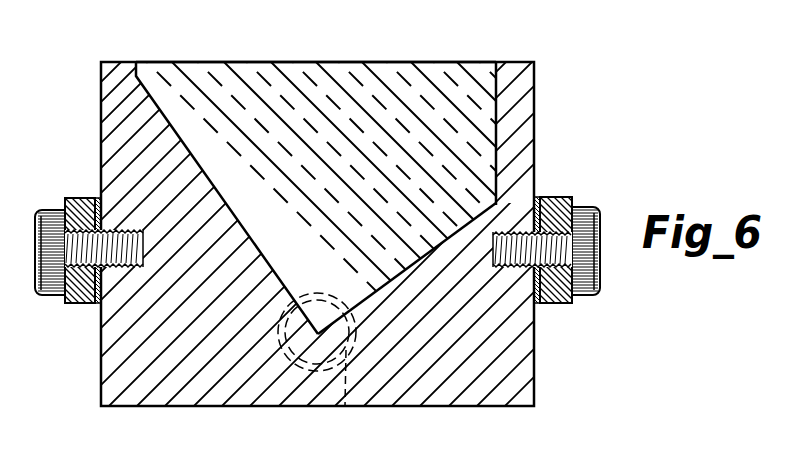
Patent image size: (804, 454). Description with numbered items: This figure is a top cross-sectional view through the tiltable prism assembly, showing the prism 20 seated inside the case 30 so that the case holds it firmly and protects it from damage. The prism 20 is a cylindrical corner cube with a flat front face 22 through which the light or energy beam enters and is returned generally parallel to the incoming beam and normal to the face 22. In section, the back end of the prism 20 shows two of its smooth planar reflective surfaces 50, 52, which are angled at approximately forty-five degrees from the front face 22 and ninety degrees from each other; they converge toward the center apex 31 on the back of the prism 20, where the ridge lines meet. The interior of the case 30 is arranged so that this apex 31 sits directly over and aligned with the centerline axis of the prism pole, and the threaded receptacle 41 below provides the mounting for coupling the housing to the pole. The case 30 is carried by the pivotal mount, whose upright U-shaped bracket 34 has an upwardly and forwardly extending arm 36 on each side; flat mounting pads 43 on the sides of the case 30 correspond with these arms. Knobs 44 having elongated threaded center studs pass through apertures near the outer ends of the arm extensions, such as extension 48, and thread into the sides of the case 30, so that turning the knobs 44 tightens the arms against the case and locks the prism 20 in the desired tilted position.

The prism 20 is at (417, 83).
The front face 22 is at (298, 62).
The case 30 is at (535, 108).
The apex 31 is at (318, 336).
The U-shaped bracket 34 is at (75, 200).
The arm 36 is at (572, 203).
The threaded receptacle 41 is at (340, 414).
The mounting pad 43 is at (98, 200).
The knob 44 is at (38, 288).
The extension 48 is at (82, 303).
The reflective surface 50 is at (410, 267).
The reflective surface 52 is at (168, 121).